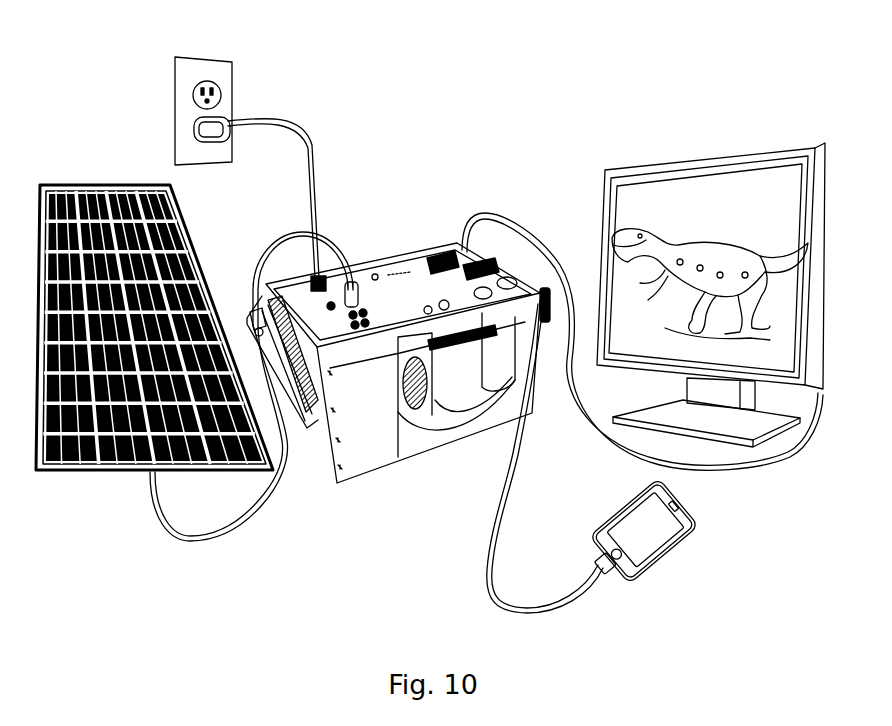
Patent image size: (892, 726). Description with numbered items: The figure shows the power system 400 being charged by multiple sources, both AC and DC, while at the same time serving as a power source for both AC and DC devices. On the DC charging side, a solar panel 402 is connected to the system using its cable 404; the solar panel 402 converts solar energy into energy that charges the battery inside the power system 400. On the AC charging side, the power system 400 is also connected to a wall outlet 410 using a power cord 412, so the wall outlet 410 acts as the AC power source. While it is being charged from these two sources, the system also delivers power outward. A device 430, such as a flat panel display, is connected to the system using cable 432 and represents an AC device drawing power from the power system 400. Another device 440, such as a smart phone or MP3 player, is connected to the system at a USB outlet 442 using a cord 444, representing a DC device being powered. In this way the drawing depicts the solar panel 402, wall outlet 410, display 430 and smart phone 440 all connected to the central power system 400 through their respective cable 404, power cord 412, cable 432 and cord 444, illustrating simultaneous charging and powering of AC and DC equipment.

The power system 400 is at (377, 223).
The solar panel 402 is at (68, 192).
The cable 404 is at (267, 510).
The wall outlet 410 is at (222, 78).
The power cord 412 is at (313, 157).
The device 430 is at (693, 162).
The cable 432 is at (507, 225).
The device 440 is at (678, 532).
The USB outlet 442 is at (488, 272).
The cord 444 is at (595, 585).